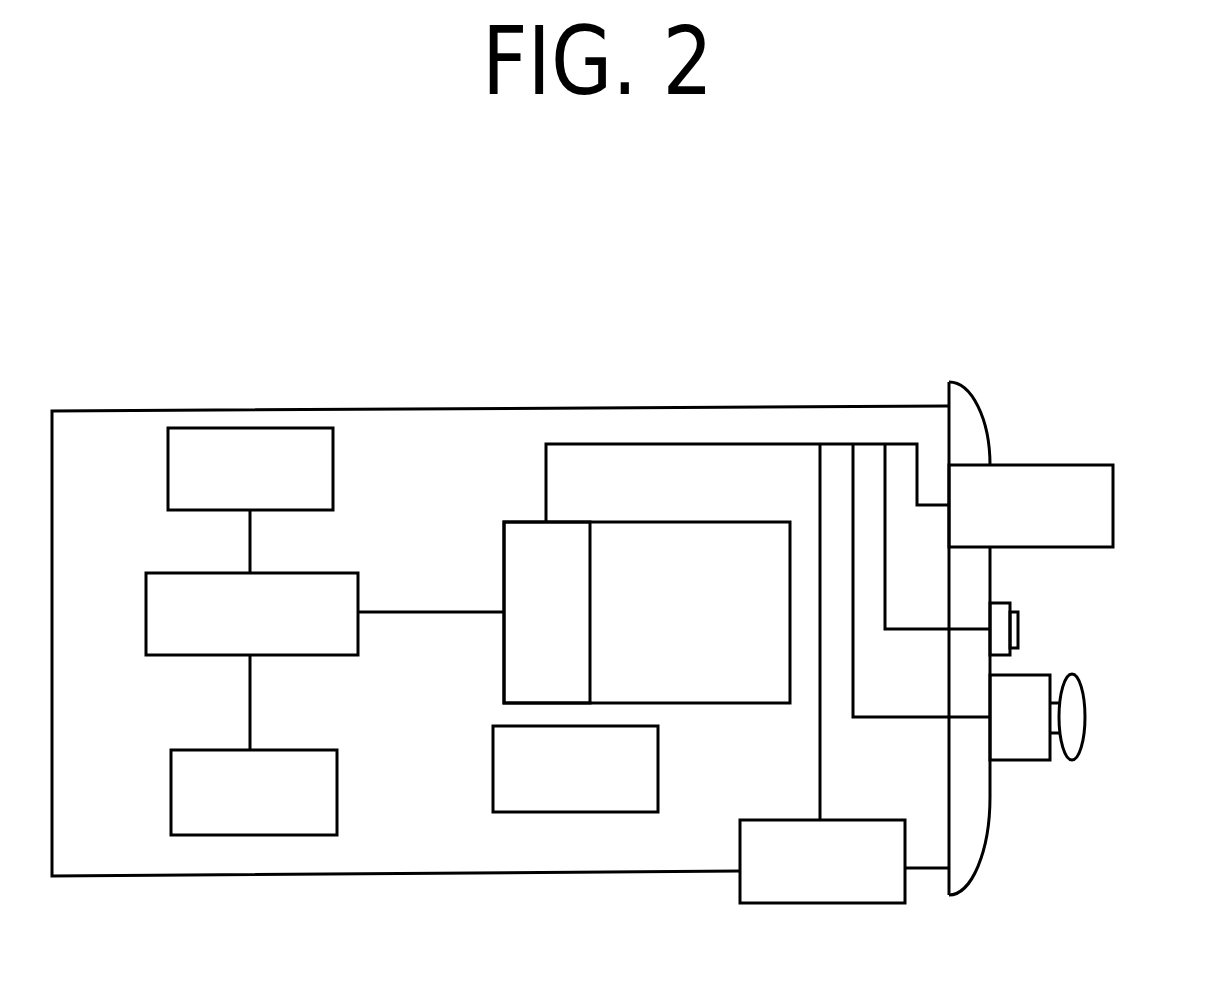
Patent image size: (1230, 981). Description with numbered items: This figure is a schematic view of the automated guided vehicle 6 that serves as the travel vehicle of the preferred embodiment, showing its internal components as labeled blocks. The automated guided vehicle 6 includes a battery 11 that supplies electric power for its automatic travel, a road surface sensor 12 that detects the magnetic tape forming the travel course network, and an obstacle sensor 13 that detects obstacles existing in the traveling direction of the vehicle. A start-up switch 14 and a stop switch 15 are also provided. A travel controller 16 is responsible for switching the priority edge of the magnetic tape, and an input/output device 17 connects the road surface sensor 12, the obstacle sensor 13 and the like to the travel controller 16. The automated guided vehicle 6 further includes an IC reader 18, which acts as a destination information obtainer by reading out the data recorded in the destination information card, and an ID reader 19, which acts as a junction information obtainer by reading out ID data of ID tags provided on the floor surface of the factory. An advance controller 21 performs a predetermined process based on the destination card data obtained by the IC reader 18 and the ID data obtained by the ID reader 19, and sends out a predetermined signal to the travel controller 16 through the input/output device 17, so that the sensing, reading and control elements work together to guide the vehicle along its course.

The automated guided vehicle 6 is at (822, 318).
The battery 11 is at (658, 783).
The road surface sensor 12 is at (868, 818).
The obstacle sensor 13 is at (1113, 505).
The start-up switch 14 is at (1018, 630).
The stop switch 15 is at (1085, 717).
The travel controller 16 is at (668, 520).
The input/output device 17 is at (528, 520).
The IC reader 18 is at (171, 792).
The ID reader 19 is at (168, 472).
The advance controller 21 is at (146, 617).